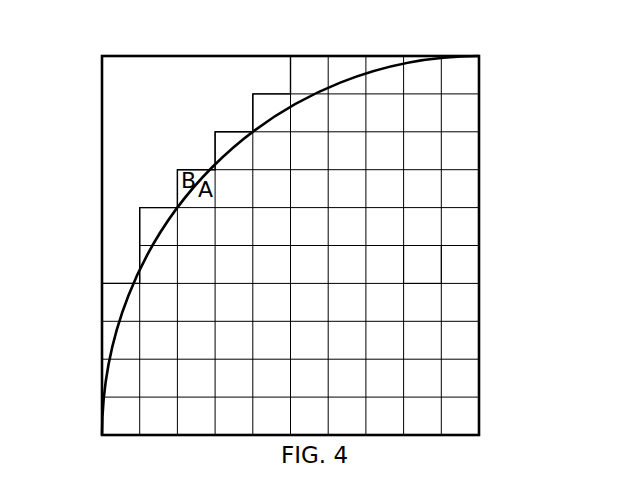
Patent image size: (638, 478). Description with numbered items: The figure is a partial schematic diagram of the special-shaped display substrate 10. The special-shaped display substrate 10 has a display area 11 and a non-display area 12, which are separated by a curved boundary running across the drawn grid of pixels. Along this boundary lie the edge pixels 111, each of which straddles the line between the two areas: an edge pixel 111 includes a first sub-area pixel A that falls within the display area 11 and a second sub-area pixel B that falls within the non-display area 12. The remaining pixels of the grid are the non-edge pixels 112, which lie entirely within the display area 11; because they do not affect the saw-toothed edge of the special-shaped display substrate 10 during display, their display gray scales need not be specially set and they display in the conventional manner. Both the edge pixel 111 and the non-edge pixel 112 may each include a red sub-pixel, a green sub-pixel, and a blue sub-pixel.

The special-shaped display substrate 10 is at (480, 89).
The display area 11 is at (405, 227).
The non-display area 12 is at (168, 78).
The edge pixel 111 is at (180, 188).
The non-edge pixel 112 is at (430, 264).